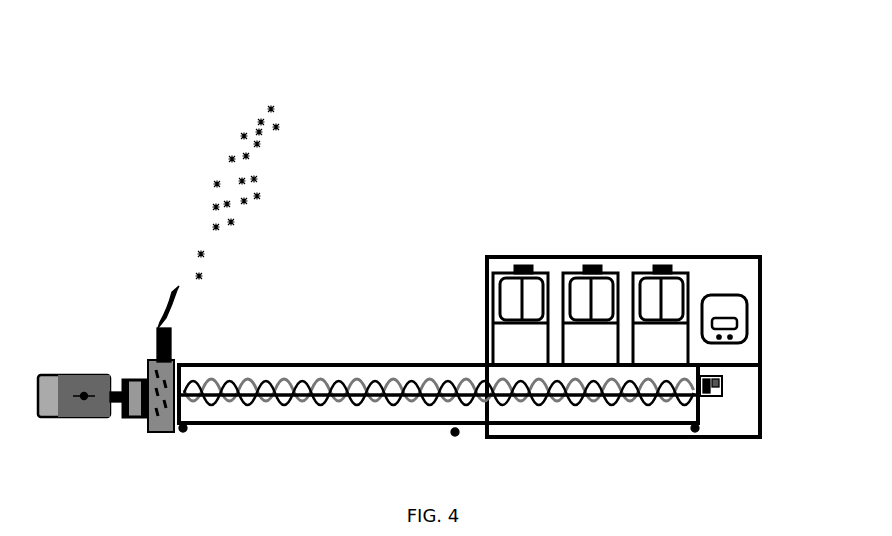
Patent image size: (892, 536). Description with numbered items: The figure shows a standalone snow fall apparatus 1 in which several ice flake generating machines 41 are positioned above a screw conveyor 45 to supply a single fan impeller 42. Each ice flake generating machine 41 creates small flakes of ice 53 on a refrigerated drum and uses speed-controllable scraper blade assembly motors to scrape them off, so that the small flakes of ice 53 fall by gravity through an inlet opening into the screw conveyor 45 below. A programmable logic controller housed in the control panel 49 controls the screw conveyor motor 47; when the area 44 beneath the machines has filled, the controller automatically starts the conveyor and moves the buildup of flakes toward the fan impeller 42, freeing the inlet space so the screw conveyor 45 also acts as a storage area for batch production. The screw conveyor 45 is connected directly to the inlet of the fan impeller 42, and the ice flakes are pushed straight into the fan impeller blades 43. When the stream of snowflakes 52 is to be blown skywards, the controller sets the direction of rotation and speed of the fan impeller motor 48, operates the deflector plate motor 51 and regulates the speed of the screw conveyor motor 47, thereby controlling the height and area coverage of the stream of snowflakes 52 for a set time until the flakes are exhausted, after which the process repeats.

The snow fall apparatus 1 is at (393, 93).
The ice flake generating machine 41 is at (649, 293).
The fan impeller 42 is at (152, 364).
The fan impeller blades 43 is at (168, 424).
The area below the ice flake generating machines 44 is at (607, 412).
The screw conveyor 45 is at (362, 383).
The screw conveyor motor 47 is at (720, 403).
The fan impeller motor 48 is at (82, 417).
The control panel 49 is at (728, 303).
The deflector plate motor 51 is at (159, 303).
The stream of snowflakes 52 is at (190, 195).
The small flakes of ice 53 is at (487, 327).